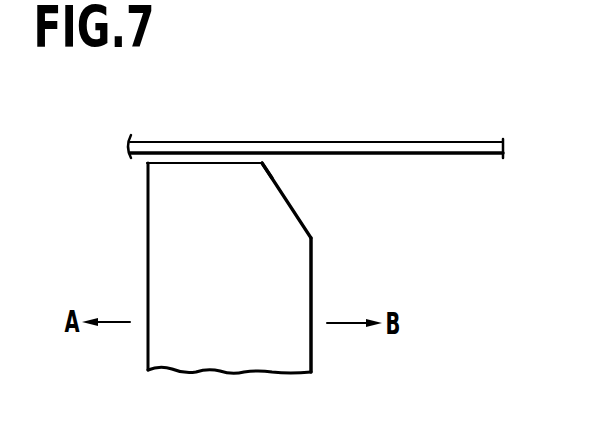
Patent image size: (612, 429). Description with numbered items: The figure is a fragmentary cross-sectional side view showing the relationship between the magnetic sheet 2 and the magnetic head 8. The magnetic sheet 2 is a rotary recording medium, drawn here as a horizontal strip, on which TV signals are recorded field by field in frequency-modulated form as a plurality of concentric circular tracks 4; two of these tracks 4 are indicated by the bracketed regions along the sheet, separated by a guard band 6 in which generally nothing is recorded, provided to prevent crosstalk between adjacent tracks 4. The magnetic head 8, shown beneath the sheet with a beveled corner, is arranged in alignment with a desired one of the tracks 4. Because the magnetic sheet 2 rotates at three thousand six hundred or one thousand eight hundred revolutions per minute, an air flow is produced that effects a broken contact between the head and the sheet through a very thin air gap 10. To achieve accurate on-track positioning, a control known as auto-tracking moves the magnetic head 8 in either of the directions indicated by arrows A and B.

The magnetic recording sheet 2 is at (462, 143).
The circular tracks 4 is at (253, 136).
The guard band 6 is at (262, 136).
The magnetic head 8 is at (300, 296).
The air gap 10 is at (266, 161).